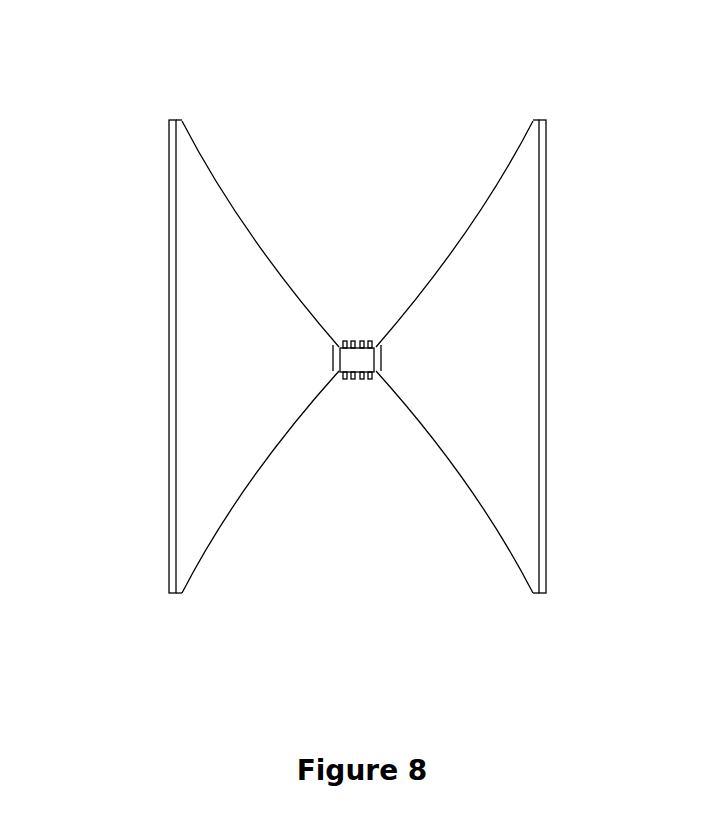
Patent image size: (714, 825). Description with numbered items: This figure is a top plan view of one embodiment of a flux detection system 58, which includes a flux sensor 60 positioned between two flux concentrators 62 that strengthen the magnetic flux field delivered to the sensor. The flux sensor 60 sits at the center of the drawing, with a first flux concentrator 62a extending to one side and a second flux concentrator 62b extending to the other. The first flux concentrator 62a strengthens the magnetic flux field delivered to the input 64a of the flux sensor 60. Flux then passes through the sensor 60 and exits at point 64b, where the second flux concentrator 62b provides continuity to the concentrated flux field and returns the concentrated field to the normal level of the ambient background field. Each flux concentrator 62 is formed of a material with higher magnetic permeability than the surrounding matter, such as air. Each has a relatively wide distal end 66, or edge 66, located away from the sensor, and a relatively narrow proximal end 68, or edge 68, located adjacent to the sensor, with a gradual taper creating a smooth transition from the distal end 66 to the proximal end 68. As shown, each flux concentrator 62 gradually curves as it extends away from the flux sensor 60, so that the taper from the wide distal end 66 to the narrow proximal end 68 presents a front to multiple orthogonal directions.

The flux detection system 58 is at (349, 321).
The flux sensor 60 is at (329, 416).
The flux concentrator 62 is at (297, 356).
The first flux concentrator 62a is at (260, 495).
The second flux concentrator 62b is at (454, 495).
The input 64a is at (343, 302).
The exit point 64b is at (400, 426).
The distal end 66 is at (349, 356).
The proximal end 68 is at (358, 347).